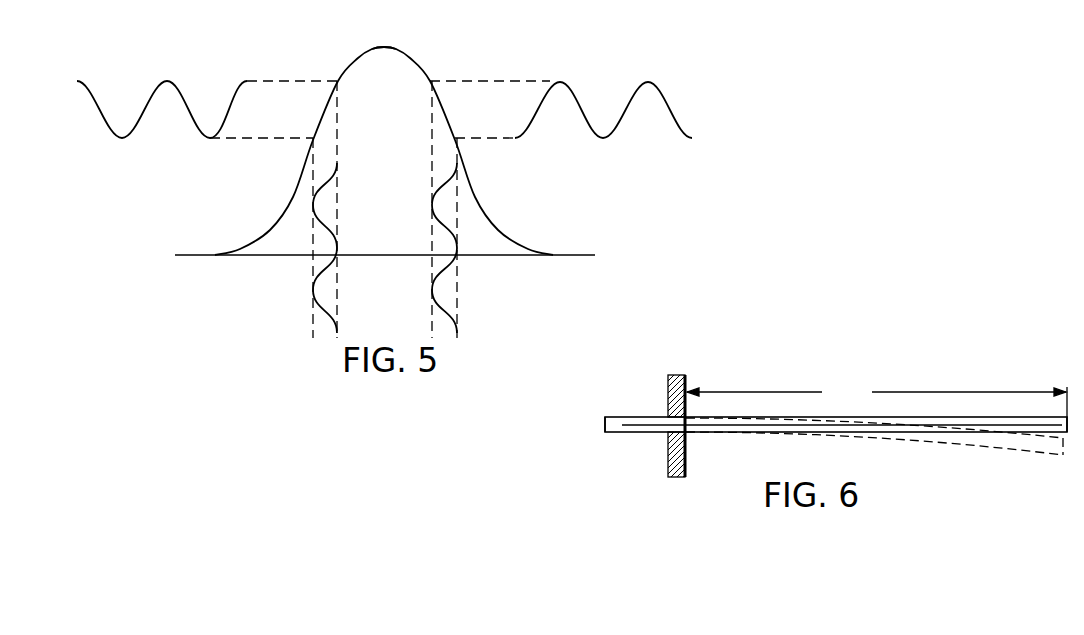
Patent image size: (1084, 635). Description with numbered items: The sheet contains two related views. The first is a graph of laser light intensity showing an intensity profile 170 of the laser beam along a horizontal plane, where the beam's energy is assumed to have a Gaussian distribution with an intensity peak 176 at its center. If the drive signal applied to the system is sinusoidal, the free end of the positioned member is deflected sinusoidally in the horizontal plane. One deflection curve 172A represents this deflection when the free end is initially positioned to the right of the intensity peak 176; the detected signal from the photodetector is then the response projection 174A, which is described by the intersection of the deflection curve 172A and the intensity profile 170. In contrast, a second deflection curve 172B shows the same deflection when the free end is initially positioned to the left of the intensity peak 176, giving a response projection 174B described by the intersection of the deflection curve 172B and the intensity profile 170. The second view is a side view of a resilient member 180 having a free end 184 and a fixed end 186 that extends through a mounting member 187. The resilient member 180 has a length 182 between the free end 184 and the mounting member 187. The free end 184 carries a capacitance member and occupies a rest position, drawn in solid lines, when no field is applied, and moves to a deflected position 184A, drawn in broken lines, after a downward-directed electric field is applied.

In FIG. 5, the intensity profile 170 is at (433, 67).
In FIG. 5, the intensity peak 176 is at (383, 46).
In FIG. 5, the response projection 174A is at (630, 113).
In FIG. 5, the response projection 174B is at (140, 112).
In FIG. 5, the deflection curve 172A is at (452, 280).
In FIG. 5, the deflection curve 172B is at (316, 272).
In FIG. 6, the resilient member 180 is at (923, 418).
In FIG. 6, the length 182 is at (877, 398).
In FIG. 6, the free end 184 is at (1058, 417).
In FIG. 6, the deflected position 184A is at (1050, 457).
In FIG. 6, the fixed end 186 is at (607, 434).
In FIG. 6, the mounting member 187 is at (686, 383).